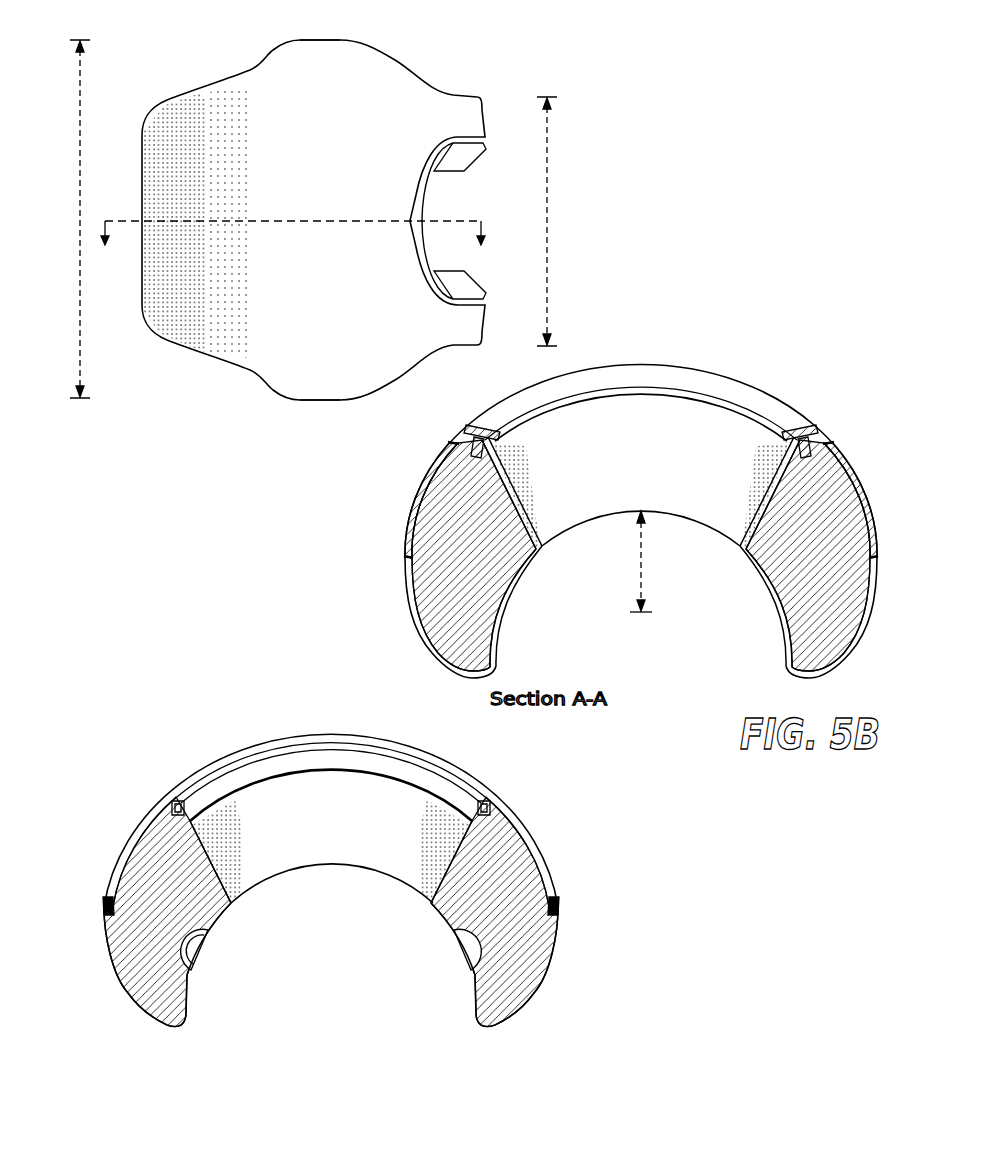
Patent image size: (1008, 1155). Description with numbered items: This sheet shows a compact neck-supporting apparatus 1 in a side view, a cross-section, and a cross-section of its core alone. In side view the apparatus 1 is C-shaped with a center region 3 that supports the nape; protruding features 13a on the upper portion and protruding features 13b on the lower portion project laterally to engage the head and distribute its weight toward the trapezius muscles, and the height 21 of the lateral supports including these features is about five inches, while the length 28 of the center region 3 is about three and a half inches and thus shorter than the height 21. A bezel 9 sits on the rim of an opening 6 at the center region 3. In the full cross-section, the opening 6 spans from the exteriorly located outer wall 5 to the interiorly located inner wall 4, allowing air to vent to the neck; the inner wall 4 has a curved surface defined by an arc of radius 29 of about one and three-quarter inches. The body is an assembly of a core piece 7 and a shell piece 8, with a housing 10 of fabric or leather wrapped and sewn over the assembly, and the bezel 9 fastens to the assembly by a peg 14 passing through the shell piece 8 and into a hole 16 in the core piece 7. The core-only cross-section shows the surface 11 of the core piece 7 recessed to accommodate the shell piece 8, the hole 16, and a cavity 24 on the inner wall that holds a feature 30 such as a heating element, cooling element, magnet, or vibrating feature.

In FIG. 5A, the supporting apparatus 1 is at (317, 247).
In FIG. 5A, the center region 3 is at (428, 73).
In FIG. 5B, the inner wall 4 is at (545, 560).
In FIG. 5B, the outer wall 5 is at (458, 420).
In FIG. 5B, the opening 6 is at (640, 430).
In FIG. 5C, the opening 6 is at (334, 858).
In FIG. 5B, the core piece 7 is at (836, 638).
In FIG. 5C, the core piece 7 is at (338, 926).
In FIG. 5B, the shell piece 8 is at (862, 488).
In FIG. 5A, the bezel 9 is at (490, 157).
In FIG. 5B, the bezel 9 is at (805, 415).
In FIG. 5B, the housing 10 is at (790, 668).
In FIG. 5C, the surface of core piece 11 is at (137, 835).
In FIG. 5A, the protruding features 13a is at (330, 52).
In FIG. 5A, the protruding features 13b is at (330, 402).
In FIG. 5B, the peg 14 is at (479, 448).
In FIG. 5C, the hole 16 is at (177, 801).
In FIG. 5A, the height 21 is at (68, 219).
In FIG. 5C, the cavity 24 is at (196, 957).
In FIG. 5A, the length 28 is at (561, 221).
In FIG. 5B, the radius 29 is at (652, 561).
In FIG. 5C, the feature 30 is at (198, 940).